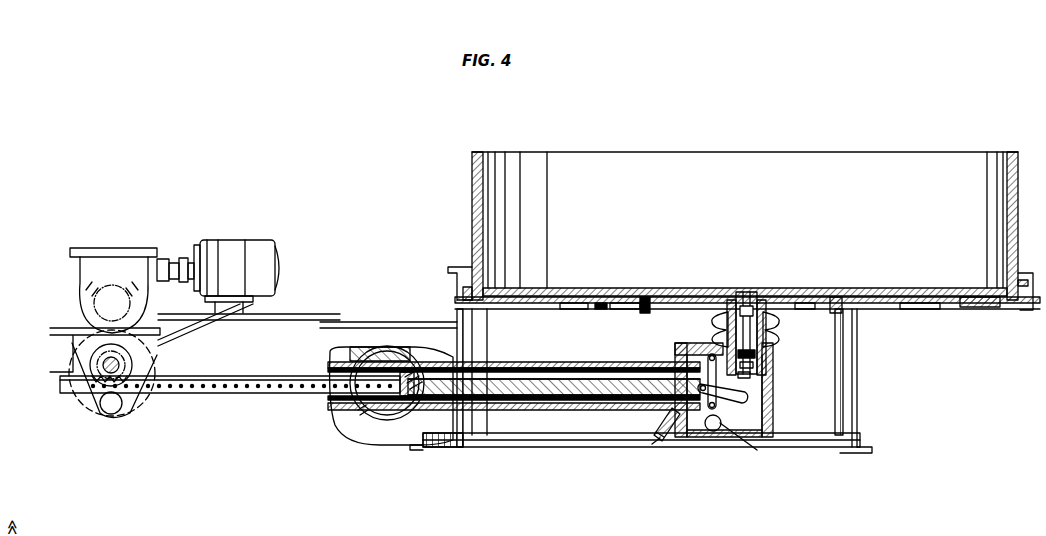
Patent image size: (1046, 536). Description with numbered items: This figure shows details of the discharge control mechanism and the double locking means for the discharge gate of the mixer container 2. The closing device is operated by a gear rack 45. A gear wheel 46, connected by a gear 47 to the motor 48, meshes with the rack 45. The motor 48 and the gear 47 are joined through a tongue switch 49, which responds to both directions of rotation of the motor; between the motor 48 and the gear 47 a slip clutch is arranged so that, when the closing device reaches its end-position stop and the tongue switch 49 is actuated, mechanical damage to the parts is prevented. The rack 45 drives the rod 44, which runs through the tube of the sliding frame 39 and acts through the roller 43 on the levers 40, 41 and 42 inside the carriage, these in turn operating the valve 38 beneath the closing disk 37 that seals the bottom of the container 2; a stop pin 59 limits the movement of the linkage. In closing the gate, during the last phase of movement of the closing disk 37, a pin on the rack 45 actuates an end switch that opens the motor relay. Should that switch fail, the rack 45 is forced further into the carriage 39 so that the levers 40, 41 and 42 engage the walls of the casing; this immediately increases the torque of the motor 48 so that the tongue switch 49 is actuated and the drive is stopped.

The mixer container 2 is at (472, 198).
The closing disk 37 is at (773, 288).
The valve 38 is at (776, 340).
The frame 39 is at (551, 362).
The lever 40 is at (743, 448).
The lever 41 is at (712, 373).
The lever 42 is at (745, 410).
The lever roller 43 is at (715, 431).
The rod 44 is at (582, 396).
The gear rack 45 is at (248, 390).
The gear wheel 46 is at (95, 373).
The gear 47 is at (108, 262).
The motor 48 is at (228, 250).
The tongue switch 49 is at (165, 262).
The stop pin 59 is at (667, 441).